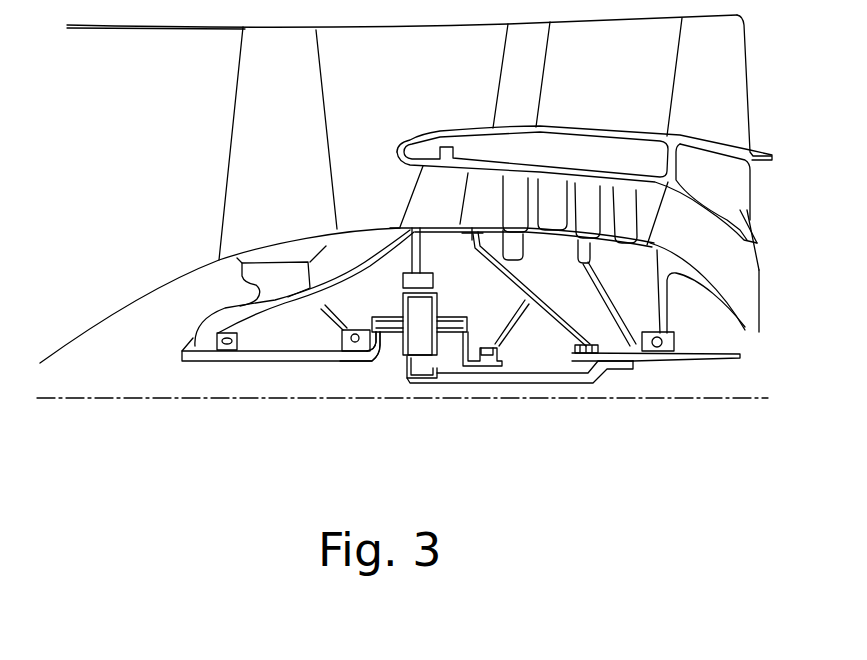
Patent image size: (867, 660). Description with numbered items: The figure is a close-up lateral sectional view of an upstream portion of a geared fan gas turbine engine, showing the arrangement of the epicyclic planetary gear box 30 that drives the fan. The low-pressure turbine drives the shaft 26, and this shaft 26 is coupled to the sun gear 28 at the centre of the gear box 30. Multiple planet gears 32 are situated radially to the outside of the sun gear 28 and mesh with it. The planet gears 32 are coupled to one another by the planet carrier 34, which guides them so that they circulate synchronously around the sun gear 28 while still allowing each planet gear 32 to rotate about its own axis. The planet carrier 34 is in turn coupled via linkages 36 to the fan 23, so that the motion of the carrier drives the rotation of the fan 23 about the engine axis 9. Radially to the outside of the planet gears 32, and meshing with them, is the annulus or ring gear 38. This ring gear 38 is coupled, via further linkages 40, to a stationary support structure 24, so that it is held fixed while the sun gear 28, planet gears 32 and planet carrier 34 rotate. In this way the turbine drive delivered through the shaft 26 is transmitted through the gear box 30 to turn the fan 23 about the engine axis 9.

The engine axis 9 is at (211, 398).
The fan 23 is at (247, 147).
The stationary support structure 24 is at (427, 193).
The shaft 26 is at (557, 383).
The sun gear 28 is at (423, 372).
The epicyclic planetary gear box 30 is at (374, 372).
The planet gears 32 is at (398, 355).
The planet carrier 34 is at (458, 357).
The linkages 36 is at (378, 342).
The annulus or ring gear 38 is at (408, 283).
The linkages 40 is at (422, 262).